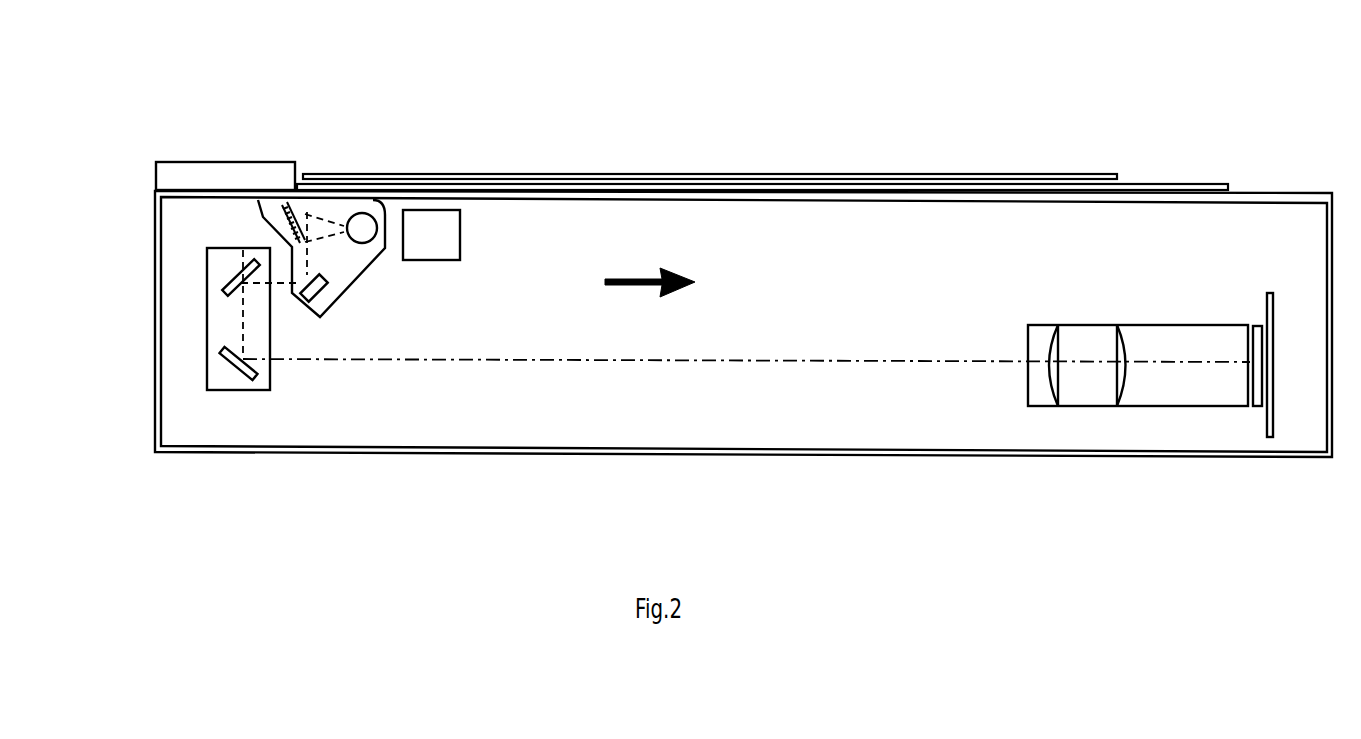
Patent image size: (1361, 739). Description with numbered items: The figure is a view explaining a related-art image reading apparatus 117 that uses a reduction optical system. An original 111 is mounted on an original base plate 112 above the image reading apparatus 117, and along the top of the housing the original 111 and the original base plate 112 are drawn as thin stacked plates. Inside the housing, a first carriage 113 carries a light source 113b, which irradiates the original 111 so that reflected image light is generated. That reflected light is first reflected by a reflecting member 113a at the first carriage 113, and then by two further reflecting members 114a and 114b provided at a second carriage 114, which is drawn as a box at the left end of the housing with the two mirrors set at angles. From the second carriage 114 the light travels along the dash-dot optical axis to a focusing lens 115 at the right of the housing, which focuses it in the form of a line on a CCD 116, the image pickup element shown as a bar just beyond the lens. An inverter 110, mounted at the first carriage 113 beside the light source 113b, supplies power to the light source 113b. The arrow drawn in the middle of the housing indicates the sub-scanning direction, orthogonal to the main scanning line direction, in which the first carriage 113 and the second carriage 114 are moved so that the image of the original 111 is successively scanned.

The inverter 110 is at (447, 240).
The original 111 is at (707, 175).
The original base plate 112 is at (1168, 185).
The first carriage 113 is at (258, 200).
The reflecting member 113a is at (314, 302).
The light source 113b is at (363, 222).
The second carriage 114 is at (220, 325).
The reflecting member 114a is at (222, 290).
The reflecting member 114b is at (228, 362).
The focusing lens 115 is at (1053, 380).
The CCD 116 is at (1251, 325).
The image reading apparatus 117 is at (552, 440).